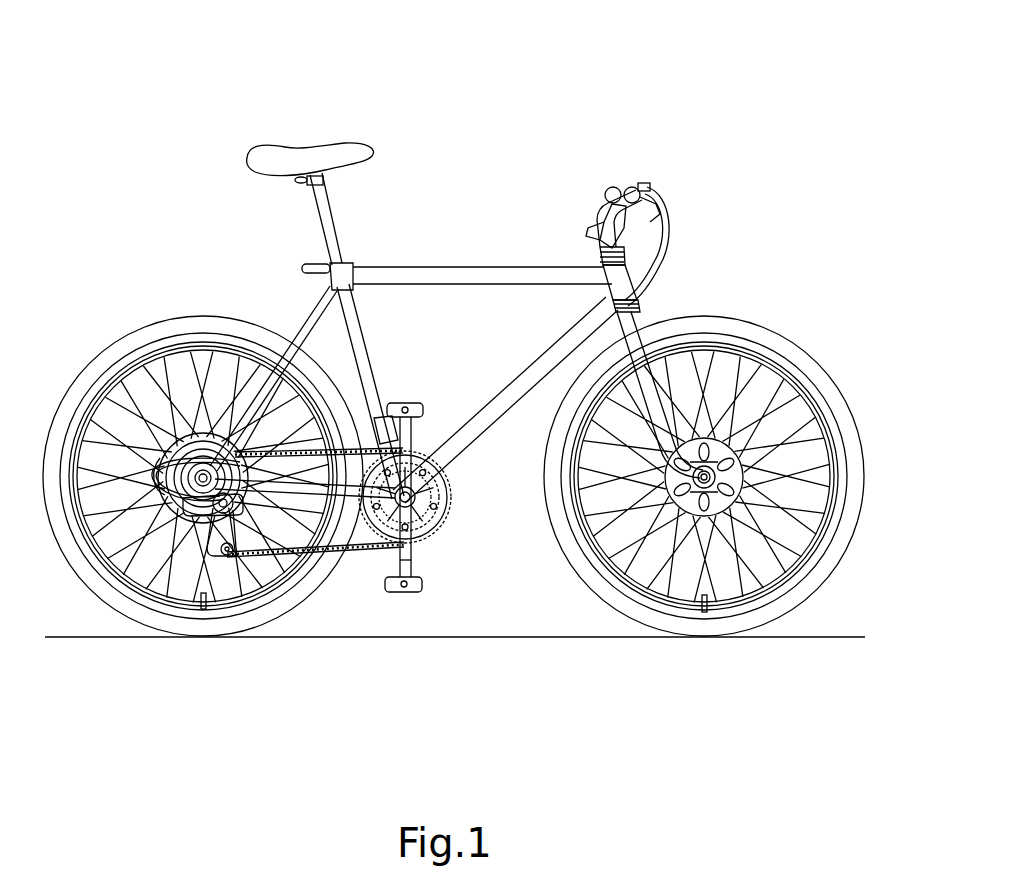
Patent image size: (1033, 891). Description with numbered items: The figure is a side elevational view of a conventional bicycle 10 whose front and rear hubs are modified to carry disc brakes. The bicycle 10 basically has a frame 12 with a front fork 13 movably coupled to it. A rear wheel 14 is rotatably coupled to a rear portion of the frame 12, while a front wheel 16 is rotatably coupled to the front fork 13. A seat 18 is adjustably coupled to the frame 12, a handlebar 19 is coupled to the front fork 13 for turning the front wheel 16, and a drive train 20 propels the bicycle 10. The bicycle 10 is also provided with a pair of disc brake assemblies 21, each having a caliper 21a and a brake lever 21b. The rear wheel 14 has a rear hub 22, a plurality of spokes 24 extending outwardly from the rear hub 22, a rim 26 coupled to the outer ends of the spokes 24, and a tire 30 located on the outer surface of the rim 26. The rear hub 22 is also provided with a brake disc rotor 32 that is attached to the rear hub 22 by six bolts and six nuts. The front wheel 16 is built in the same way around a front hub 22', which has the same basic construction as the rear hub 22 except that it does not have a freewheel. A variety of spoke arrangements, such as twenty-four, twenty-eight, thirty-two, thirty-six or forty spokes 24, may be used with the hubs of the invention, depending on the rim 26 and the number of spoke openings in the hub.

The bicycle 10 is at (630, 143).
The frame 12 is at (455, 264).
The front fork 13 is at (637, 317).
The rear wheel 14 is at (208, 312).
The front wheel 16 is at (750, 317).
The seat 18 is at (310, 145).
The handlebar 19 is at (607, 190).
The drive train 20 is at (447, 533).
The disc brake assemblies 21 is at (223, 413).
The caliper 21a is at (203, 433).
The brake lever 21b is at (643, 208).
The rear hub 22 is at (119, 391).
The front hub 22' is at (802, 529).
The spokes 24 is at (277, 570).
The rim 26 is at (228, 337).
The tire 30 is at (137, 340).
The brake disc rotor 32 is at (285, 440).